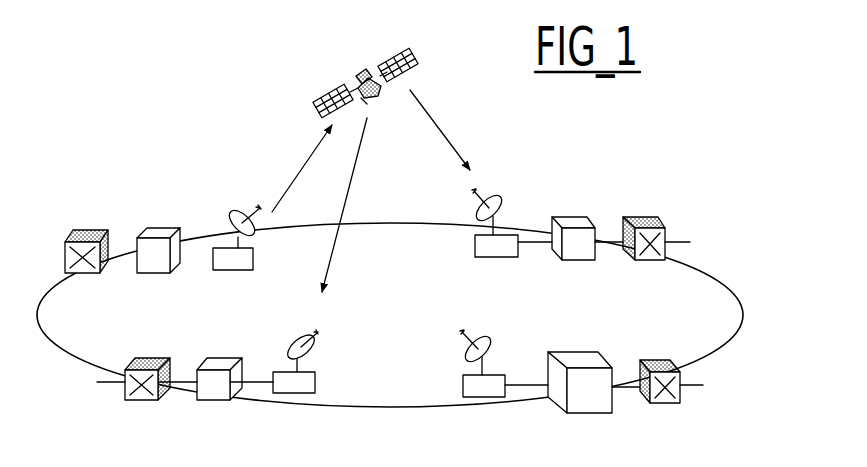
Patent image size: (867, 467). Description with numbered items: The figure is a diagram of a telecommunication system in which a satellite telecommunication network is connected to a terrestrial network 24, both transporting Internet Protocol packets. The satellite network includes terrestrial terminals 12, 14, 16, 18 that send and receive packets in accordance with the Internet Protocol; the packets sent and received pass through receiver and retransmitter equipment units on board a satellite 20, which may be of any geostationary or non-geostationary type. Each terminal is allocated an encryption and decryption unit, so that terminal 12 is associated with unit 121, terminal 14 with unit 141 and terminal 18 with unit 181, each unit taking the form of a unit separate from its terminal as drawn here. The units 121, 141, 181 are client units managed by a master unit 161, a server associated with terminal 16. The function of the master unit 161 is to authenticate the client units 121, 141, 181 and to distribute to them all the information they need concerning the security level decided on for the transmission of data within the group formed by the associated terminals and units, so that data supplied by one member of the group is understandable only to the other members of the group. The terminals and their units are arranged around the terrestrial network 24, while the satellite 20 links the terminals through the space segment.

The terrestrial terminal 12 is at (237, 271).
The encryption and decryption unit 121 is at (163, 228).
The terrestrial terminal 14 is at (495, 258).
The encryption and decryption unit 141 is at (575, 217).
The terrestrial terminal 16 is at (488, 397).
The master unit 161 is at (580, 352).
The terrestrial terminal 18 is at (298, 395).
The encryption and decryption unit 181 is at (220, 400).
The satellite 20 is at (377, 97).
The terrestrial network 24 is at (728, 350).